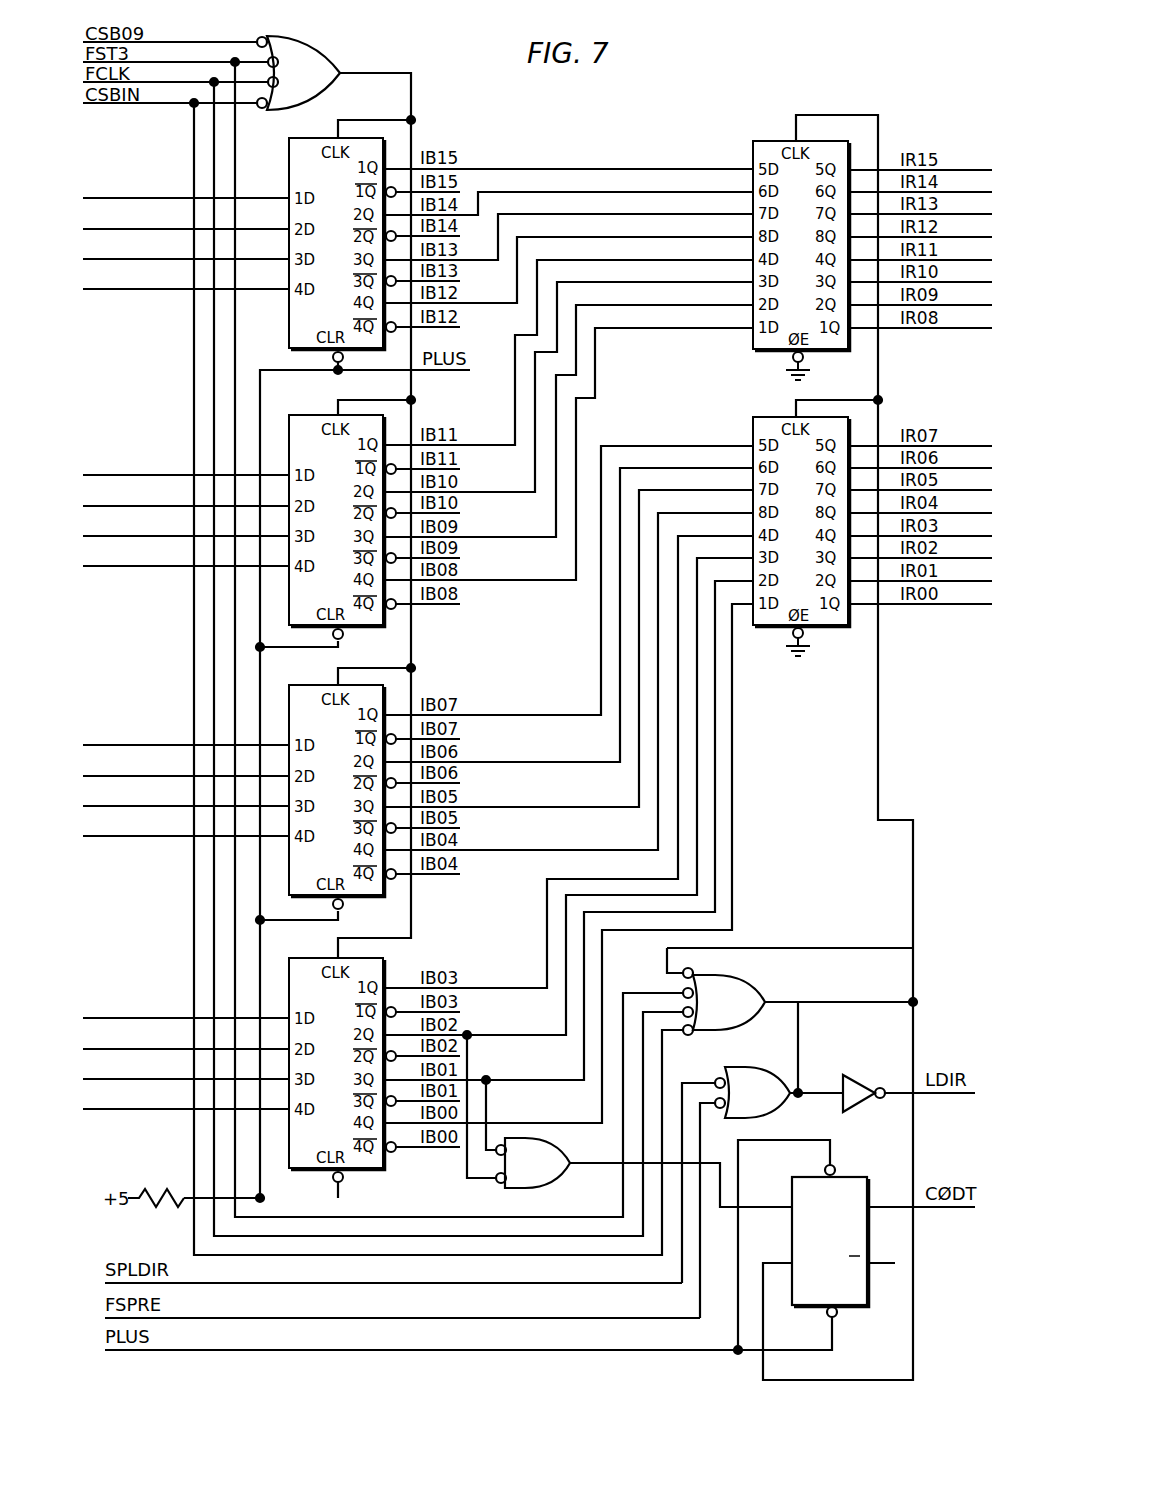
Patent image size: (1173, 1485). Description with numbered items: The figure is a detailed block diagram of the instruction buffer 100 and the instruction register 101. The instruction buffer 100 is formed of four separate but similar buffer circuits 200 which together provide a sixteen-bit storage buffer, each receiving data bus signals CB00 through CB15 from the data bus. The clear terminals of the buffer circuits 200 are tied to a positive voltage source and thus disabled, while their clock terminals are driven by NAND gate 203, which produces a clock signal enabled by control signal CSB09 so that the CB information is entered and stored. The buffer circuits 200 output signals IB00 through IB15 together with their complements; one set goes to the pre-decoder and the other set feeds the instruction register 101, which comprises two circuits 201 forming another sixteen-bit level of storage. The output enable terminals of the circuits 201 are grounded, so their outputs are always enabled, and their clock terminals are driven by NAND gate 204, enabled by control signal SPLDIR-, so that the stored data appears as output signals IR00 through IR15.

The instruction buffer 100 is at (137, 663).
The instruction register 101 is at (540, 1133).
The buffer circuits 200 is at (305, 957).
The circuits 201 is at (779, 416).
The NAND gate 203 is at (334, 60).
The NAND gate 204 is at (768, 974).